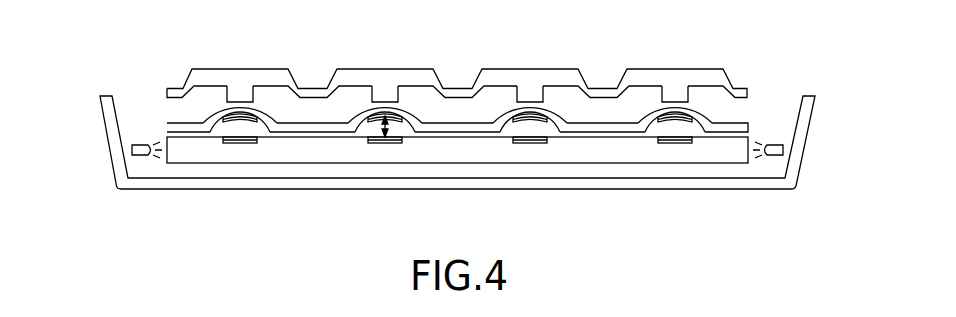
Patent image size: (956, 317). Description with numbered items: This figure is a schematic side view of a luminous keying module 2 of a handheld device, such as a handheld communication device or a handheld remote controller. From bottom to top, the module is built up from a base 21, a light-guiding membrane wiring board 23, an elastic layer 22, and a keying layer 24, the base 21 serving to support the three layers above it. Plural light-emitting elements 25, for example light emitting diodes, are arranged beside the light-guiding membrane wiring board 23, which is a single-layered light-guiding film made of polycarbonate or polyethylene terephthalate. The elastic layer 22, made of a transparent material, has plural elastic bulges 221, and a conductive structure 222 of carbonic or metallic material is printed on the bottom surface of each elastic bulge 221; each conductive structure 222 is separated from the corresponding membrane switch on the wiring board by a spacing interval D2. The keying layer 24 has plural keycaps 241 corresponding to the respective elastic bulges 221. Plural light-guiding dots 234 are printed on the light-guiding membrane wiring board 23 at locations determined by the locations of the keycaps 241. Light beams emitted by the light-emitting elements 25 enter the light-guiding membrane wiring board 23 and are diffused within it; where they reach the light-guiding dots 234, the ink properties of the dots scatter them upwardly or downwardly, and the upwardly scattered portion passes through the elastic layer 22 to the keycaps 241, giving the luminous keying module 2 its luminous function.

The luminous keying module 2 is at (673, 20).
The base 21 is at (612, 182).
The elastic layer 22 is at (455, 87).
The elastic bulge 221 is at (216, 112).
The conductive structure 222 is at (242, 113).
The light-guiding membrane wiring board 23 is at (452, 183).
The light-guiding dot 234 is at (226, 141).
The keying layer 24 is at (462, 68).
The keycap 241 is at (237, 79).
The light-emitting element 25 is at (132, 151).
The spacing interval D2 is at (388, 126).